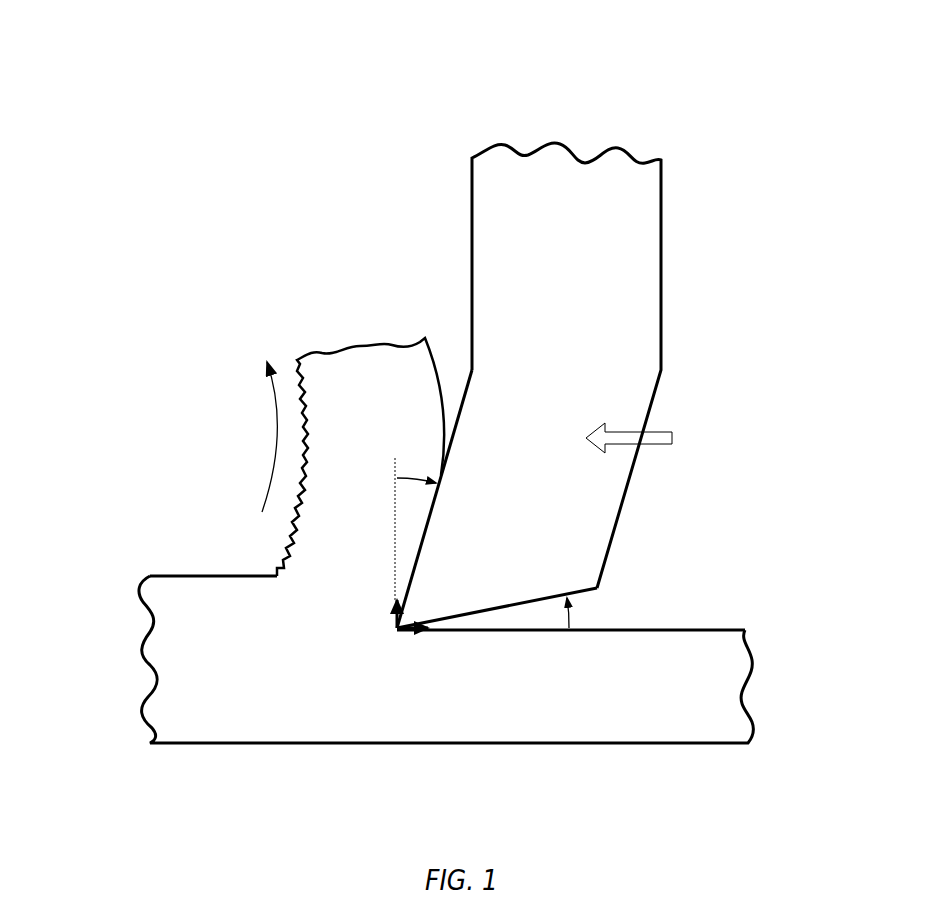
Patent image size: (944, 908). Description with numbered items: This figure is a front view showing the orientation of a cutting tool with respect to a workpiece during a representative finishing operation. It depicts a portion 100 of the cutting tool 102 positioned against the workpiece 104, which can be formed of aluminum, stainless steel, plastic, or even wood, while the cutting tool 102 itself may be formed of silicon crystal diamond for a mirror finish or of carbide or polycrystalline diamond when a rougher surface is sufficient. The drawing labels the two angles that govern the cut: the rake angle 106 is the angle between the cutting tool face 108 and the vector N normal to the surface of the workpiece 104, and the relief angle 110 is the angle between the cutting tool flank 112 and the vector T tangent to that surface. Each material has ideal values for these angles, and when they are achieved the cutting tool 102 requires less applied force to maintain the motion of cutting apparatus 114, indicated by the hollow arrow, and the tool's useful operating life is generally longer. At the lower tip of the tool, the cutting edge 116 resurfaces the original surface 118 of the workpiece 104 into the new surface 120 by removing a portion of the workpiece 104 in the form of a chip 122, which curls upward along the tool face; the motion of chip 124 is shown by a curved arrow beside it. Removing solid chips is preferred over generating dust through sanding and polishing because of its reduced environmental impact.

The portion 100 is at (690, 88).
The cutting tool 102 is at (624, 385).
The workpiece 104 is at (451, 621).
The rake angle 106 is at (422, 460).
The cutting tool face 108 is at (440, 521).
The relief angle 110 is at (638, 613).
The cutting tool flank 112 is at (508, 593).
The motion of cutting apparatus 114 is at (742, 432).
The cutting edge 116 is at (396, 633).
The original surface 118 is at (222, 565).
The new surface 120 is at (783, 598).
The chip 122 is at (360, 457).
The motion of chip 124 is at (196, 437).